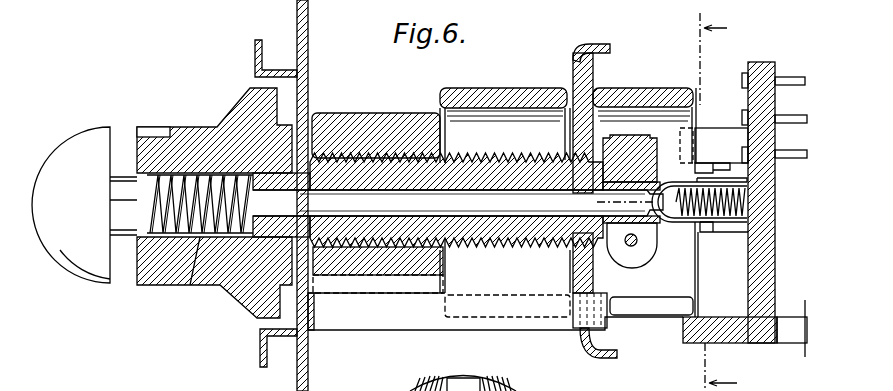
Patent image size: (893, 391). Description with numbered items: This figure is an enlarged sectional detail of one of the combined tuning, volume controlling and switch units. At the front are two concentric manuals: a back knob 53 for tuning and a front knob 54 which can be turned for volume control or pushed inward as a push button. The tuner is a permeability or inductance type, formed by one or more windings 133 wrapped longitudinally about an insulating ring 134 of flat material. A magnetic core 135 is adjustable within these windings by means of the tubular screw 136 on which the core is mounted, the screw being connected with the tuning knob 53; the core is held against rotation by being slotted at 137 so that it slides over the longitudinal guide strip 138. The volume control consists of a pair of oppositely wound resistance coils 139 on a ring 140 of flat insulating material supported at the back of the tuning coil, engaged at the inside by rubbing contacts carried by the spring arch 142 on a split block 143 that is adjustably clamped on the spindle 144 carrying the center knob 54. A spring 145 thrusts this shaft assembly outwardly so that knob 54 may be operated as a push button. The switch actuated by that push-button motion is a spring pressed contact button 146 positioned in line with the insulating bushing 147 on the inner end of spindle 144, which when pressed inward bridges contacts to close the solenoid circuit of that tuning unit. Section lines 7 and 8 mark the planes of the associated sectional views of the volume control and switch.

The back knob 53 is at (188, 127).
The front knob 54 is at (75, 143).
The windings 133 is at (468, 89).
The insulating ring 134 is at (515, 96).
The magnetic core 135 is at (364, 113).
The tubular screw 136 is at (482, 158).
The slot 137 is at (393, 278).
The longitudinal guide strip 138 is at (345, 322).
The resistance coils 139 is at (612, 88).
The ring 140 is at (660, 90).
The spring arch 142 is at (640, 136).
The split block 143 is at (633, 250).
The spindle 144 is at (458, 203).
The spring 145 is at (200, 245).
The spring pressed contact button 146 is at (712, 232).
The insulating bushing 147 is at (663, 224).
The section line 7- 7 is at (709, 202).
The section line 8- 8 is at (804, 170).